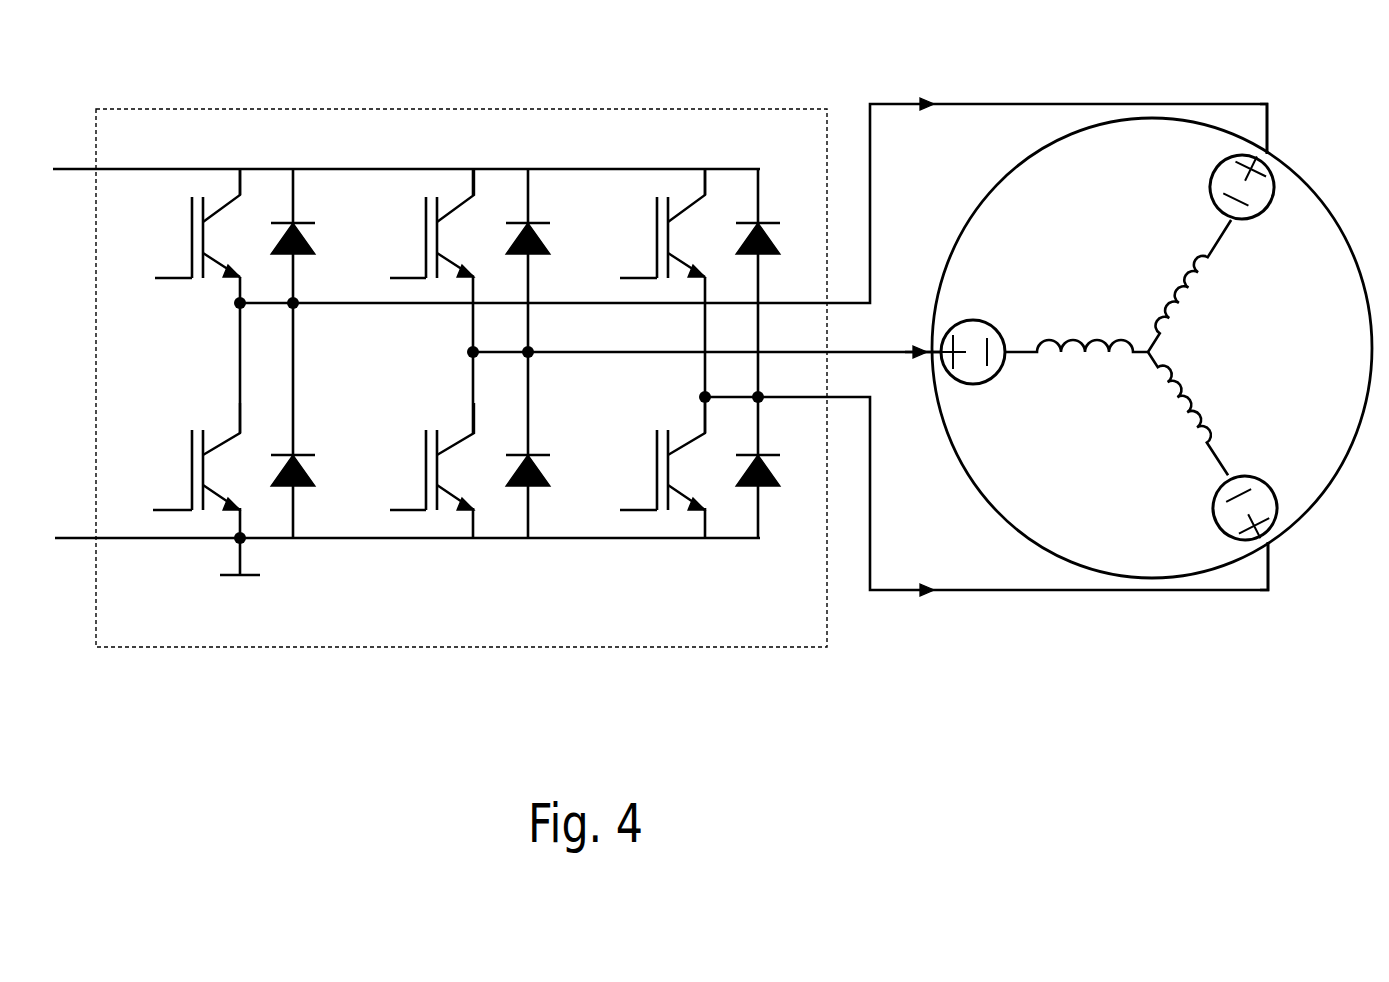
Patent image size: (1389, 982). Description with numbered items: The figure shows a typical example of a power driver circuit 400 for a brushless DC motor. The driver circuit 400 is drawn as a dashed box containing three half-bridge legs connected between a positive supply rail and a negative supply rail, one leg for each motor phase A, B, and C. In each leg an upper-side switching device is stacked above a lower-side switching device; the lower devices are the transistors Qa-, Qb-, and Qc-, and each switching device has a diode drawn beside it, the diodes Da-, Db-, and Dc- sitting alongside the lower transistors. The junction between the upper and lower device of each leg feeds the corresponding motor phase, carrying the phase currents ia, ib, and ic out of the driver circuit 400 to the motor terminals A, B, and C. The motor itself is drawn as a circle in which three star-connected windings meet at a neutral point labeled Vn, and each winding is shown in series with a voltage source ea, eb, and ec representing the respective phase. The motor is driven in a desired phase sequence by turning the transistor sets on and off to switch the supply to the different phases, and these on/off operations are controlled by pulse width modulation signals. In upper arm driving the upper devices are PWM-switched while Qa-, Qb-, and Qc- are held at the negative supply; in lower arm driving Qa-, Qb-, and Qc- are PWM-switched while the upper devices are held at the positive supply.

The power driver circuit 400 is at (195, 108).
The lower-side switching device of phase A Qa- is at (172, 462).
The lower-side switching device of phase B Qb- is at (408, 462).
The lower-side switching device of phase C Qc- is at (640, 459).
The phase A lower diode Da- is at (313, 452).
The phase B lower diode Db- is at (546, 443).
The phase C lower diode Dc- is at (776, 452).
The phase A current ia is at (1047, 179).
The phase B current ib is at (884, 334).
The phase C current ic is at (1047, 496).
The phase A back-EMF source ea is at (1217, 185).
The phase B back-EMF source eb is at (972, 327).
The phase C back-EMF source ec is at (1245, 488).
The phase A is at (1280, 129).
The phase B is at (894, 368).
The phase C is at (1281, 566).
The neutral point voltage Vn is at (1120, 345).